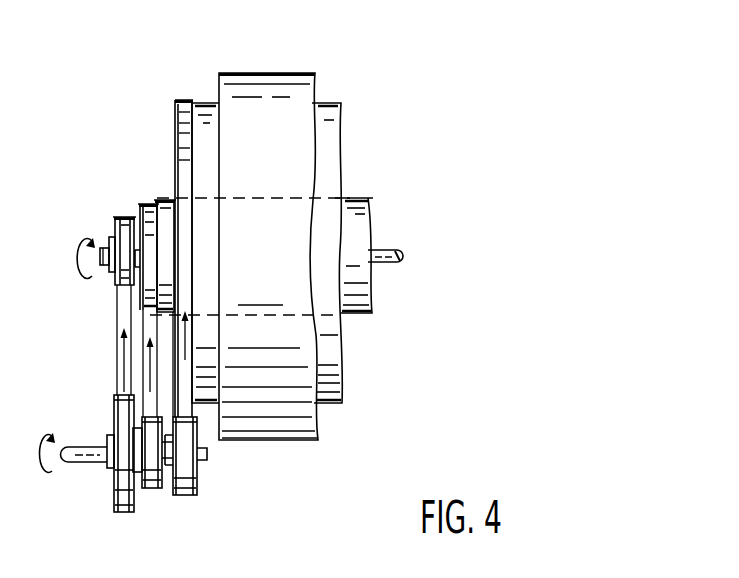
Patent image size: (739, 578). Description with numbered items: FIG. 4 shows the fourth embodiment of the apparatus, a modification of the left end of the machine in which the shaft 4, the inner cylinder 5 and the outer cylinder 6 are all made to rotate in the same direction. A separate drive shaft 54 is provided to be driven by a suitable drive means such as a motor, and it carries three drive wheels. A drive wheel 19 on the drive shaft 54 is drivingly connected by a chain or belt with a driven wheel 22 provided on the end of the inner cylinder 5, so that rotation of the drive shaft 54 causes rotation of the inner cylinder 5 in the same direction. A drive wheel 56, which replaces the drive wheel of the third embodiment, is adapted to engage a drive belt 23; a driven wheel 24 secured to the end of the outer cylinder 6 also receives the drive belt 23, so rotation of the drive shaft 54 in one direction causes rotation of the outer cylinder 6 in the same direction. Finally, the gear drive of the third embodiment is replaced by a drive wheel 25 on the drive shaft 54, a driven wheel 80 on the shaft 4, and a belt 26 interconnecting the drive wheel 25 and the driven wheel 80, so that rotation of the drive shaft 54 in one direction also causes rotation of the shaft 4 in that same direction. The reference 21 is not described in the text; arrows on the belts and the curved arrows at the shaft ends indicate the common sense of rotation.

The shaft 4 is at (104, 265).
The inner cylinder 5 is at (167, 198).
The outer cylinder 6 is at (205, 103).
The drive wheel 19 is at (166, 480).
The reference line 21 is at (150, 315).
The driven wheel 22 is at (140, 205).
The drive belt 23 is at (184, 134).
The driven wheel 24 is at (177, 110).
The drive wheel 25 is at (116, 500).
The belt 26 is at (117, 362).
The drive shaft 54 is at (88, 460).
The drive wheel 56 is at (195, 482).
The driven wheel 80 is at (117, 220).